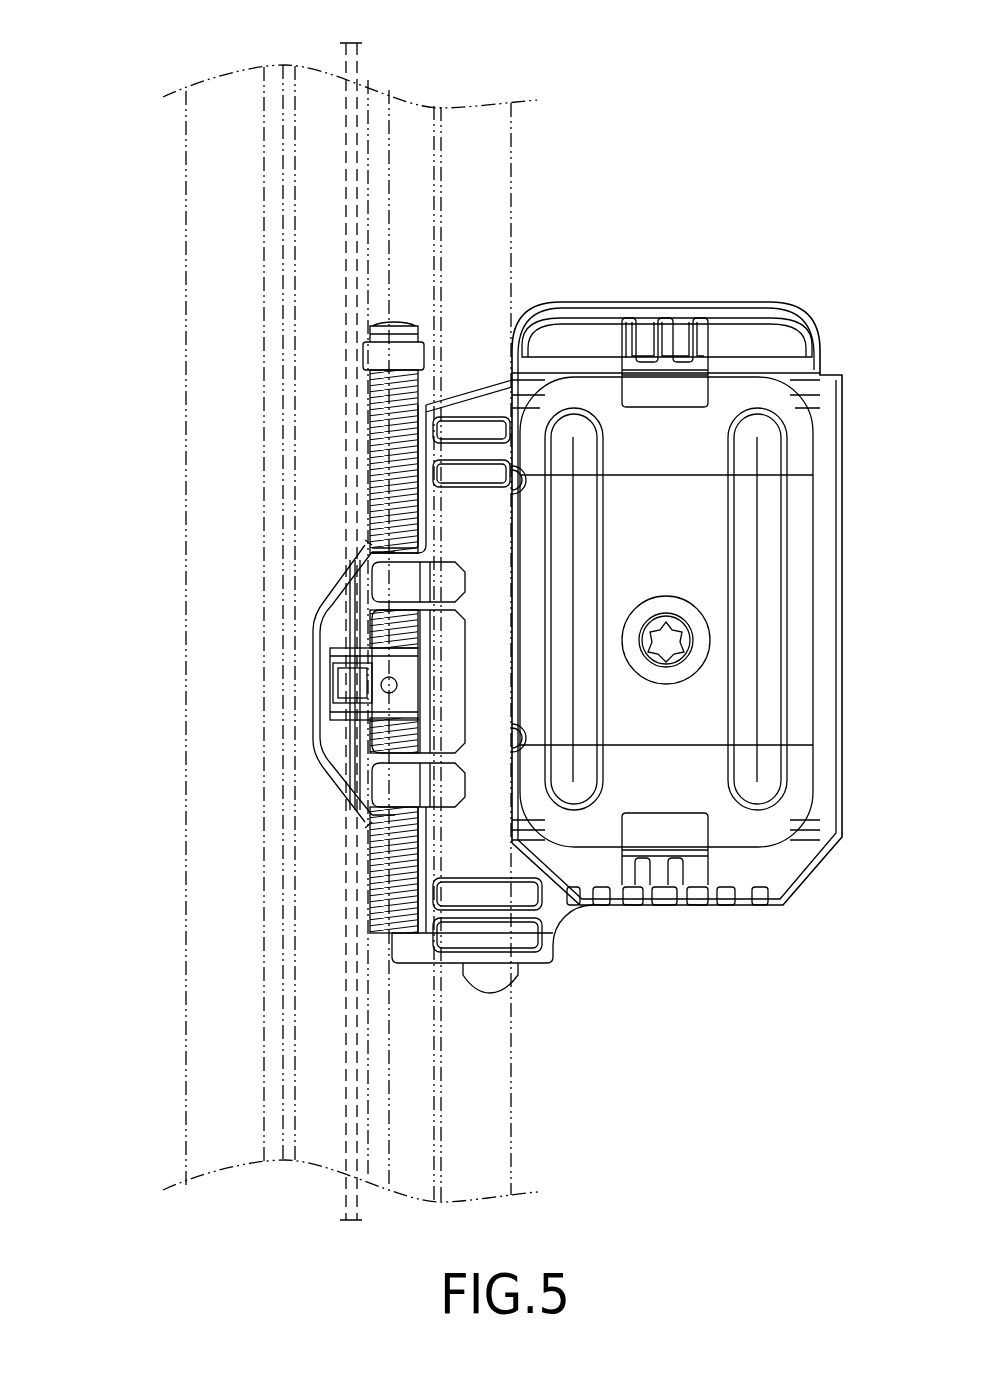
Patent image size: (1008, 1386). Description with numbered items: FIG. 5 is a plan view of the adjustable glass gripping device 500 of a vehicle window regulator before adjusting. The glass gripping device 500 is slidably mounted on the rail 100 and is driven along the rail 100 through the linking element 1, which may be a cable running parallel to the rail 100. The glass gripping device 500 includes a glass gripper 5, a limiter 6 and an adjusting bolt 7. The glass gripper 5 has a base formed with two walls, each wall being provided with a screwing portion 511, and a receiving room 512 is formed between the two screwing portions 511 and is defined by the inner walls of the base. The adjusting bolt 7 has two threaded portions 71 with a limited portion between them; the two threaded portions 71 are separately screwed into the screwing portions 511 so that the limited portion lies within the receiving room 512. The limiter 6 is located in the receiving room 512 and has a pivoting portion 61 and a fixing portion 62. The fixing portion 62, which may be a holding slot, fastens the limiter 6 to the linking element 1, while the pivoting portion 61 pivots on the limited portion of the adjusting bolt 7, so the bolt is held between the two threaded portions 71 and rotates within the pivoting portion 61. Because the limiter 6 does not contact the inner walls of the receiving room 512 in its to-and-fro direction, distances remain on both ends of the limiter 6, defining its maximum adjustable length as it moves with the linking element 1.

The rail 100 is at (184, 170).
The linking element 1 is at (350, 106).
The glass gripping device 500 is at (524, 39).
The glass gripper 5 is at (747, 293).
The adjusting bolt 7 is at (412, 320).
The threaded portion 71 is at (368, 428).
The screwing portion 511 is at (392, 550).
The receiving room 512 is at (339, 622).
The limiter 6 is at (328, 682).
The pivoting portion 61 is at (400, 700).
The fixing portion 62 is at (330, 712).